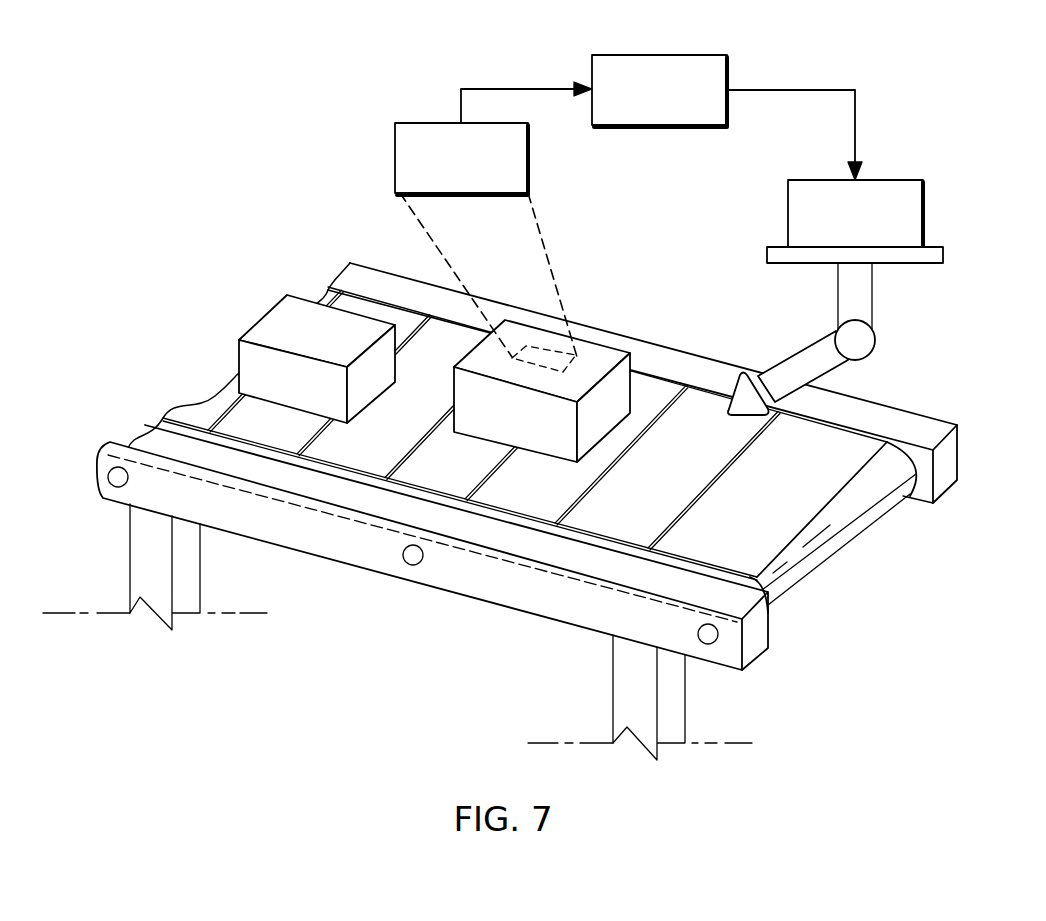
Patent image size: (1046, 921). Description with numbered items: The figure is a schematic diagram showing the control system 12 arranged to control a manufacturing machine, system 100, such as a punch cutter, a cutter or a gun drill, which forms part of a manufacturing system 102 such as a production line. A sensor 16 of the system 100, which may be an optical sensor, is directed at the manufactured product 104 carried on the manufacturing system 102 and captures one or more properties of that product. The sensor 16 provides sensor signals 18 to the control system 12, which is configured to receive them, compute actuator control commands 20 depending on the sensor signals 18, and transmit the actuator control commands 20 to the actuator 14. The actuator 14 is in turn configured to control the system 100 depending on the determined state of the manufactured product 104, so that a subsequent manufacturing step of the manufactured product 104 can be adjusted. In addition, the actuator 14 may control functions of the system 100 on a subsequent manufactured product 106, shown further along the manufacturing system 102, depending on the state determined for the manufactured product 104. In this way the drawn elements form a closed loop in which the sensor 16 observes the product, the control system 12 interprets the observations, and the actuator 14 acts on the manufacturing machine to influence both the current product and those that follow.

The control system 12 is at (646, 55).
The actuator 14 is at (900, 178).
The sensor 16 is at (395, 158).
The sensor signals 18 is at (527, 89).
The actuator control commands 20 is at (790, 90).
The system 100 is at (800, 357).
The manufacturing system 102 is at (843, 555).
The manufactured product 104 is at (587, 357).
The subsequent manufactured product 106 is at (272, 322).